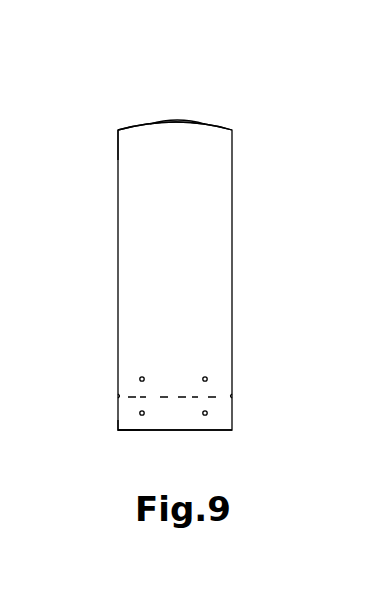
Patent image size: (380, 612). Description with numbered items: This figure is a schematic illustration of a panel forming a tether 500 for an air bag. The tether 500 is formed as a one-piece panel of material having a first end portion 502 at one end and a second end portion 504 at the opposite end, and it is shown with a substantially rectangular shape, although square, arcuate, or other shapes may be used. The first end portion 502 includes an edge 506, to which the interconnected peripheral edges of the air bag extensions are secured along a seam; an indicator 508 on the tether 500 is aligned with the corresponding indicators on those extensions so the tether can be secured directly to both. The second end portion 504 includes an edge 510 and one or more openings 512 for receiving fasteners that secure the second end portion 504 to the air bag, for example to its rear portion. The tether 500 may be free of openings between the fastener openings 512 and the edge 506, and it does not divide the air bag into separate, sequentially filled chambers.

The tether 500 is at (247, 238).
The first end portion 502 is at (228, 113).
The second end portion 504 is at (218, 444).
The edge 506 is at (137, 125).
The indicator 508 is at (174, 135).
The edge 510 is at (137, 432).
The openings 512 is at (208, 413).